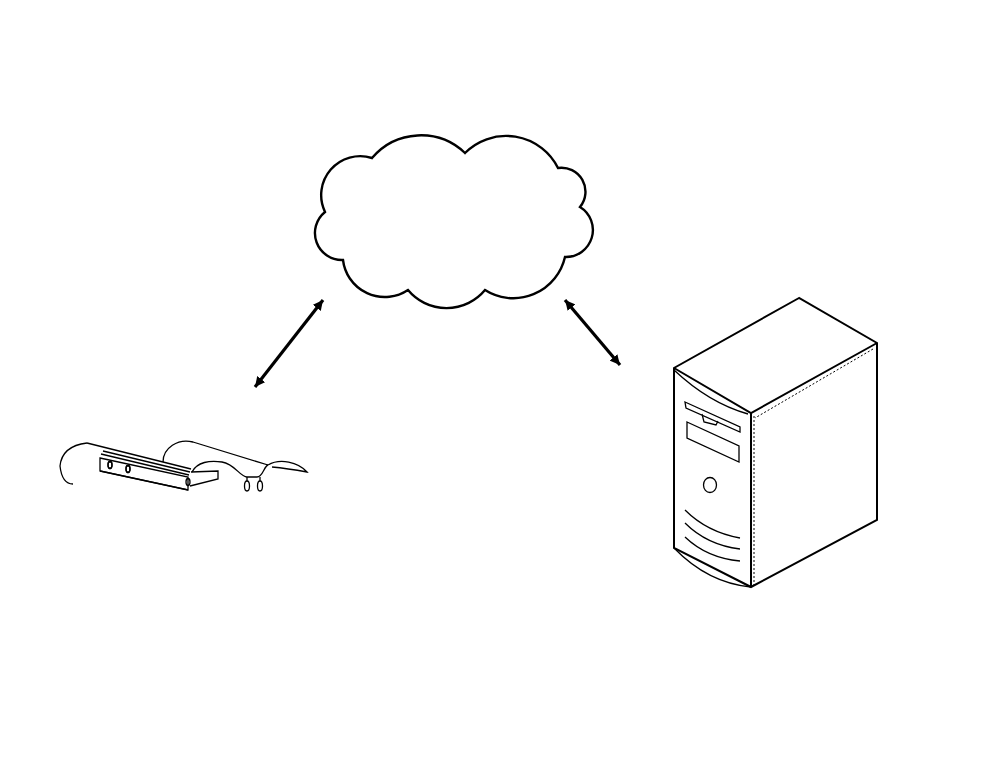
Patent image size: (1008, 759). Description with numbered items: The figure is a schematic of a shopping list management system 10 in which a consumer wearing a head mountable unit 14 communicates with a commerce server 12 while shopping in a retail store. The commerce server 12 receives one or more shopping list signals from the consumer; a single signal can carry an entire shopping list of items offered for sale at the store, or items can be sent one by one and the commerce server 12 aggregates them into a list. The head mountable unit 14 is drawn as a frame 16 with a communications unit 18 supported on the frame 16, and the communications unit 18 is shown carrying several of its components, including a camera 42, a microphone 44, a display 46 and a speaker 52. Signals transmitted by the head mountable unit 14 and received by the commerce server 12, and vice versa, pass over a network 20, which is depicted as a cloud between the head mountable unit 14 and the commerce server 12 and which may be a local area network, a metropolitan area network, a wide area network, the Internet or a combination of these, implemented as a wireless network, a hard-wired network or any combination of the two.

The shopping list management system 10 is at (443, 28).
The commerce server 12 is at (765, 583).
The head mountable unit 14 is at (122, 400).
The frame 16 is at (222, 447).
The communications unit 18 is at (108, 533).
The network 20 is at (530, 140).
The camera 42 is at (188, 490).
The microphone 44 is at (128, 472).
The display 46 is at (203, 478).
The speaker 52 is at (107, 474).